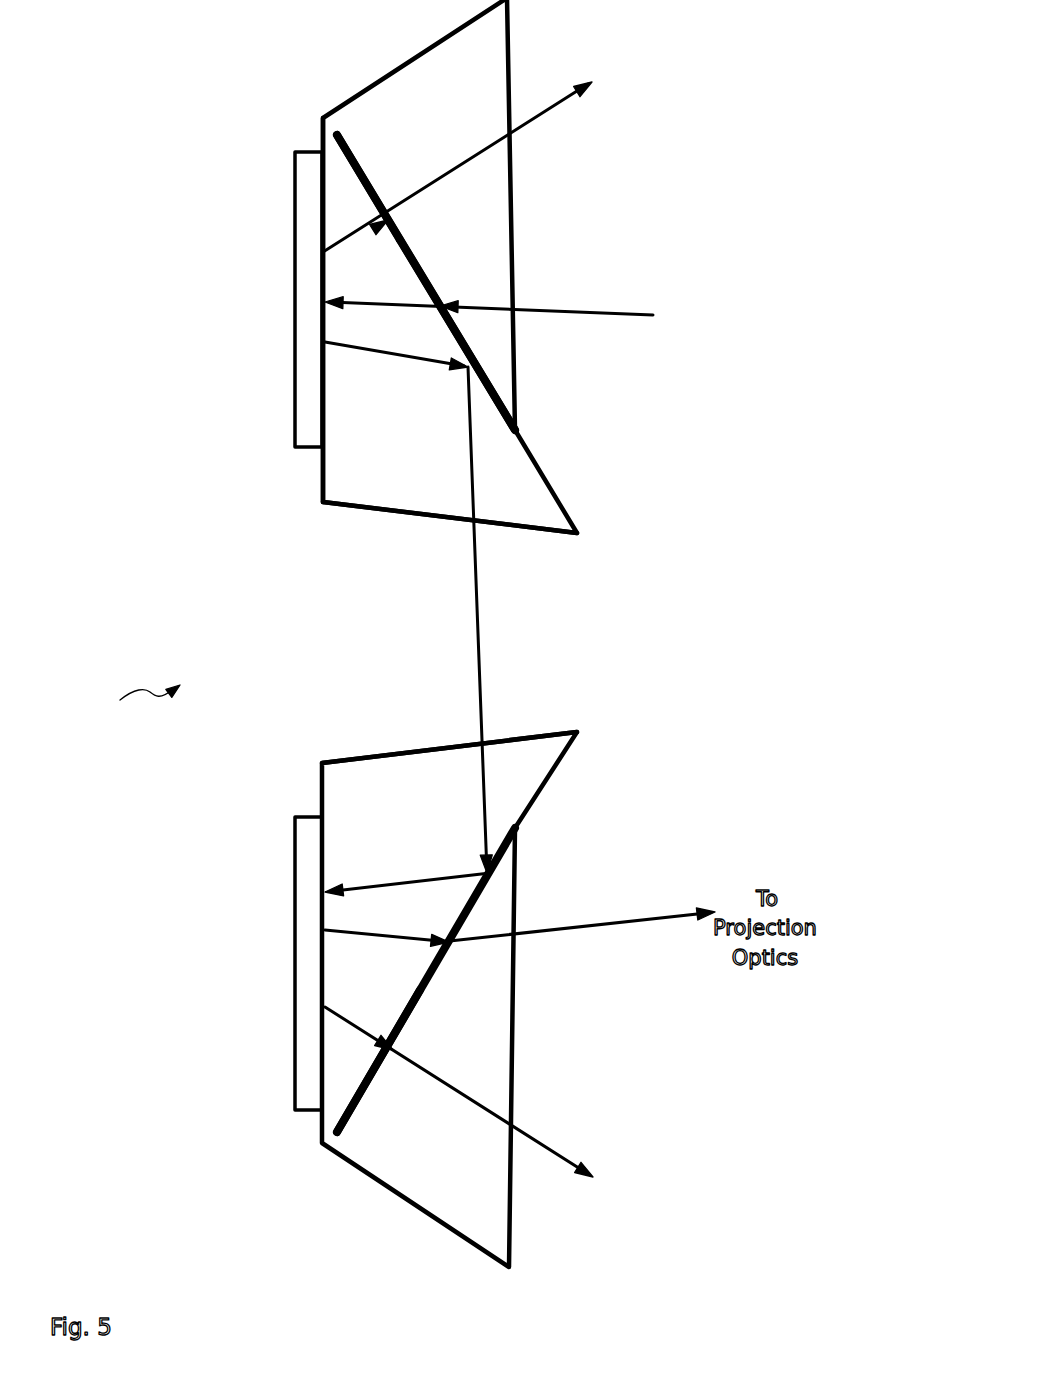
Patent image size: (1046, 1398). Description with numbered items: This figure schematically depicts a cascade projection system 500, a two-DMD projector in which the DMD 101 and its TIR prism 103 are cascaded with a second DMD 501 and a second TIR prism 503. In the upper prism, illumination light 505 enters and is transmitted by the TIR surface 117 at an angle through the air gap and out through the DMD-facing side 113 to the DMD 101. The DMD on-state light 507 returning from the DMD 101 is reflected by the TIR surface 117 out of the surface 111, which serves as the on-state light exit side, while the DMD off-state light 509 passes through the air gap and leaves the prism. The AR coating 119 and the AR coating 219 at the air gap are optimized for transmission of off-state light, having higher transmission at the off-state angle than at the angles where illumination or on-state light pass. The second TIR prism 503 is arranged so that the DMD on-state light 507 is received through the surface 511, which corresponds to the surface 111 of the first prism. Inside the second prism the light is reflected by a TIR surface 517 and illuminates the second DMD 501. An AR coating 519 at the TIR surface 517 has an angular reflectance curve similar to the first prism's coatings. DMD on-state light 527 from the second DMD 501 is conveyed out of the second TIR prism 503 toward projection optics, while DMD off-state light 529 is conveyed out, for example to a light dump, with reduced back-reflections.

The DMD 101 is at (295, 360).
The TIR prism 103 is at (322, 501).
The surface 111 is at (397, 512).
The DMD-facing side 113 is at (320, 466).
The TIR surface 117 is at (332, 148).
The AR coating 119 is at (424, 258).
The AR coating 219 is at (516, 304).
The cascade projection system 500 is at (132, 707).
The second DMD 501 is at (293, 902).
The second TIR prism 503 is at (320, 760).
The illumination light 505 is at (612, 310).
The DMD on-state light 507 is at (415, 358).
The DMD off-state light 509 is at (592, 80).
The surface 511 is at (423, 748).
The TIR surface 517 is at (370, 1070).
The AR coating 519 is at (362, 1095).
The DMD on-state light 527 is at (715, 908).
The DMD off-state light 529 is at (593, 1170).